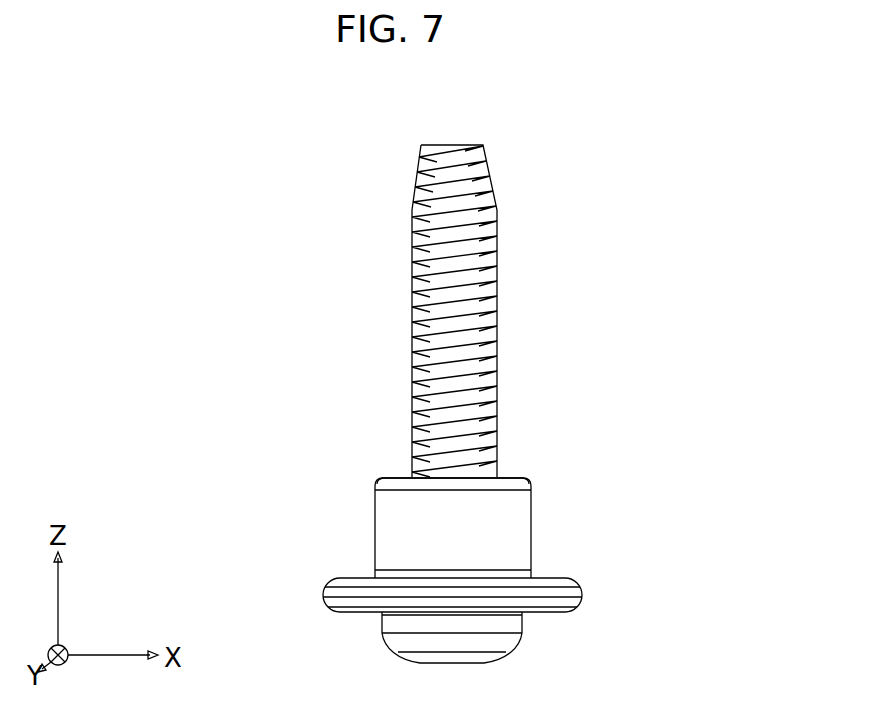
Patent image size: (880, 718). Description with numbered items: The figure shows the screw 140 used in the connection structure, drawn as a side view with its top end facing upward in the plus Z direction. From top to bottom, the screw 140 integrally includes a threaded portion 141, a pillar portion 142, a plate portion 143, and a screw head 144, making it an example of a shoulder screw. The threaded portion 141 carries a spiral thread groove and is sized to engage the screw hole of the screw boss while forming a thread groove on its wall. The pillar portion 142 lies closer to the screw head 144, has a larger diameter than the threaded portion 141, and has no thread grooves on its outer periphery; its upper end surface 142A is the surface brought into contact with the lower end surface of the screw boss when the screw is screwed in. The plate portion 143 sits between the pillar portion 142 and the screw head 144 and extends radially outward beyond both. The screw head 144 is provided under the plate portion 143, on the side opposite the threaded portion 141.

The screw 140 is at (770, 122).
The threaded portion 141 is at (498, 333).
The pillar portion 142 is at (531, 530).
The upper end surface of the pillar portion 142A is at (392, 478).
The plate portion 143 is at (582, 598).
The screw head 144 is at (521, 650).